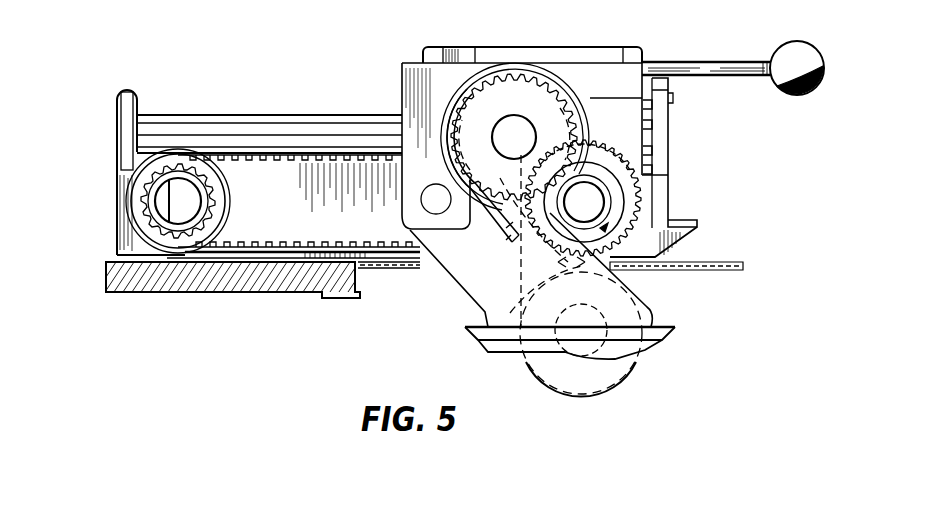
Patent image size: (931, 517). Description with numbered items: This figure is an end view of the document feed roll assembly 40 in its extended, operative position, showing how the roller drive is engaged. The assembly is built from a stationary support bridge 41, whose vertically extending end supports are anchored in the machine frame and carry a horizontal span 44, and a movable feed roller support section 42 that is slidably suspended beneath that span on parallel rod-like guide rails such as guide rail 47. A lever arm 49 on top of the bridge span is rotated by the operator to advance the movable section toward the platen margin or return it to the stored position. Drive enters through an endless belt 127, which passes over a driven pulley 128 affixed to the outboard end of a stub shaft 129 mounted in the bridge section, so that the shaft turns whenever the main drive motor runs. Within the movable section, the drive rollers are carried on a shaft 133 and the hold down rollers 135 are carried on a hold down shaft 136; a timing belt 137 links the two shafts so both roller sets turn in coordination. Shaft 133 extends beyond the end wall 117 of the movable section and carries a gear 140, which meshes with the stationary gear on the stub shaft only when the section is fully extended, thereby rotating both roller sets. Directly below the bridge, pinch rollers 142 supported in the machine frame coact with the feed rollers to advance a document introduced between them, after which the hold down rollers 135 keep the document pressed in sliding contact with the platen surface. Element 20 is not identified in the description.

The base plate 20 is at (106, 284).
The document feed roll assembly 40 is at (648, 8).
The stationary support bridge 41 is at (470, 40).
The movable feed roller support section 42 is at (196, 111).
The horizontal span 44 is at (532, 48).
The guide rail 47 is at (290, 106).
The lever arm 49 is at (818, 68).
The end wall 117 is at (122, 241).
The endless belt 127 is at (503, 235).
The driven pulley 128 is at (576, 90).
The stub shaft 129 is at (536, 98).
The shaft 133 is at (652, 197).
The hold down rollers 135 is at (195, 262).
The hold down shaft 136 is at (193, 203).
The timing belt 137 is at (345, 152).
The gear 140 is at (650, 217).
The pinch rollers 142 is at (615, 362).